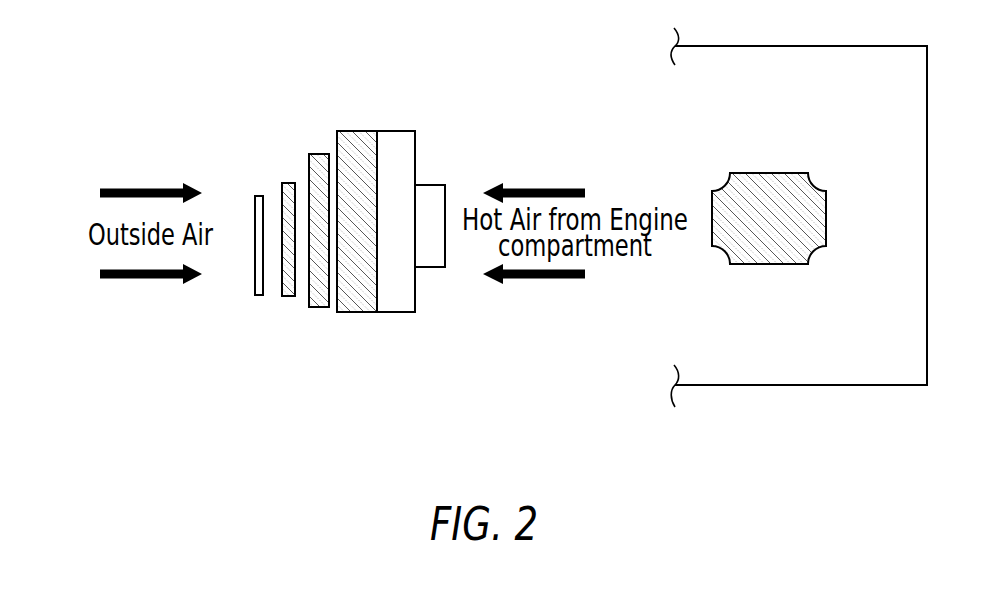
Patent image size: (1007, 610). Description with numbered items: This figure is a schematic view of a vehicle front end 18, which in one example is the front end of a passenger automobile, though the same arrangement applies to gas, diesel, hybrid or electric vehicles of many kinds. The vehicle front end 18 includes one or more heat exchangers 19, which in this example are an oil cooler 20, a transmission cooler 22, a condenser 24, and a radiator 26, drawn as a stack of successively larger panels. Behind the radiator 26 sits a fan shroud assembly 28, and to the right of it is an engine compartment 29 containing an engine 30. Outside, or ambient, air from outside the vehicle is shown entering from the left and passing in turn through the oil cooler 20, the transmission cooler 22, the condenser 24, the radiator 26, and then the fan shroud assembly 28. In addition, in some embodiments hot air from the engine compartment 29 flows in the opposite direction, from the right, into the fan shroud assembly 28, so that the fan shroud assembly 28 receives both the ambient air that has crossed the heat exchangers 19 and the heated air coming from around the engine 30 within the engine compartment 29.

The vehicle front end 18 is at (82, 121).
The heat exchangers 19 is at (413, 387).
The oil cooler 20 is at (258, 296).
The transmission cooler 22 is at (288, 297).
The condenser 24 is at (318, 307).
The radiator 26 is at (377, 312).
The fan shroud assembly 28 is at (435, 317).
The engine compartment 29 is at (797, 385).
The engine 30 is at (748, 264).